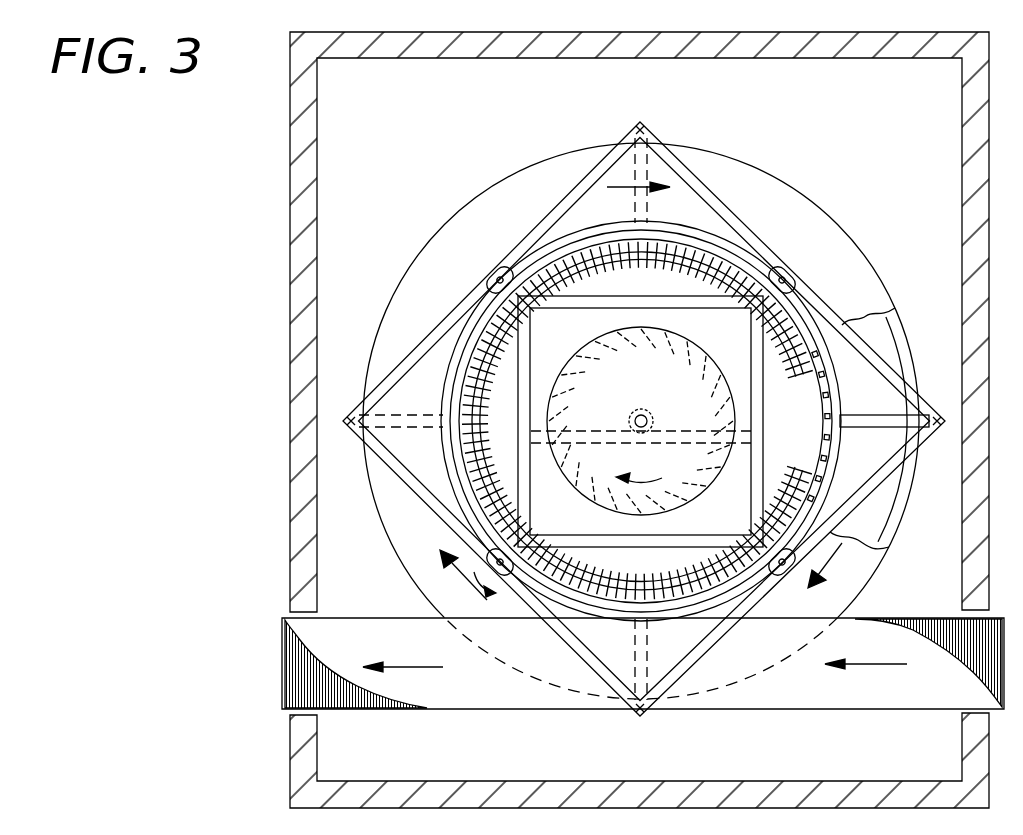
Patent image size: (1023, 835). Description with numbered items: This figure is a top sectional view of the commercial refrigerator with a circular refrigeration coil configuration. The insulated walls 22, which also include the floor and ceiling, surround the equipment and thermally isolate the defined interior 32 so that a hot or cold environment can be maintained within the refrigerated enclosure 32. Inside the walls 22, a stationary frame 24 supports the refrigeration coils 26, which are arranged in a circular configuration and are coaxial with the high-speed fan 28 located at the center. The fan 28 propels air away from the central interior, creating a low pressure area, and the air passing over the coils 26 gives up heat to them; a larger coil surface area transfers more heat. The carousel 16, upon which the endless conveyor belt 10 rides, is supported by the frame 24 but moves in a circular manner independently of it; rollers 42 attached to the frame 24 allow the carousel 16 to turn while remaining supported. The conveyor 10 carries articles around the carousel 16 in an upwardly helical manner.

The endless conveyor belt 10 is at (818, 703).
The carousel 16 is at (636, 120).
The insulated walls 22 is at (290, 190).
The frame 24 is at (600, 226).
The refrigeration coils 26 is at (617, 270).
The high-speed fan 28 is at (697, 322).
The refrigerated enclosure interior 32 is at (440, 140).
The rollers 42 is at (496, 276).